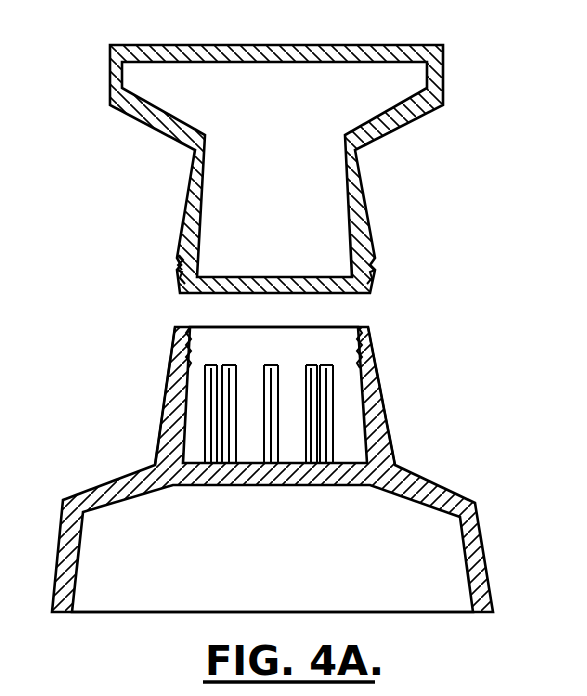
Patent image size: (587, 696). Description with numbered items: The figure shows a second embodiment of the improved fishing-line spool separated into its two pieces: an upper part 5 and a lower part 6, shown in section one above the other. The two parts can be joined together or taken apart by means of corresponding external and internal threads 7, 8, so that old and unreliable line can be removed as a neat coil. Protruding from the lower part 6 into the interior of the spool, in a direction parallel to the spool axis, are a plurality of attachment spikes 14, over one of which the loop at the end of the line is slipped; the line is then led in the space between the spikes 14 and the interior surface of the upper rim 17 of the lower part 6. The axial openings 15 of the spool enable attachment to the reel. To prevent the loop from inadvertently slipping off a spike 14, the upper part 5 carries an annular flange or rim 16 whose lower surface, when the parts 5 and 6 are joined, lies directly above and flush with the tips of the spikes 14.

The upper part 5 is at (443, 48).
The lower part 6 is at (477, 505).
The external threads 7 is at (180, 272).
The internal threads 8 is at (193, 343).
The attachment spikes 14 is at (236, 368).
The axial openings 15 is at (273, 52).
The annular flange 16 is at (207, 277).
The upper rim 17 is at (163, 400).